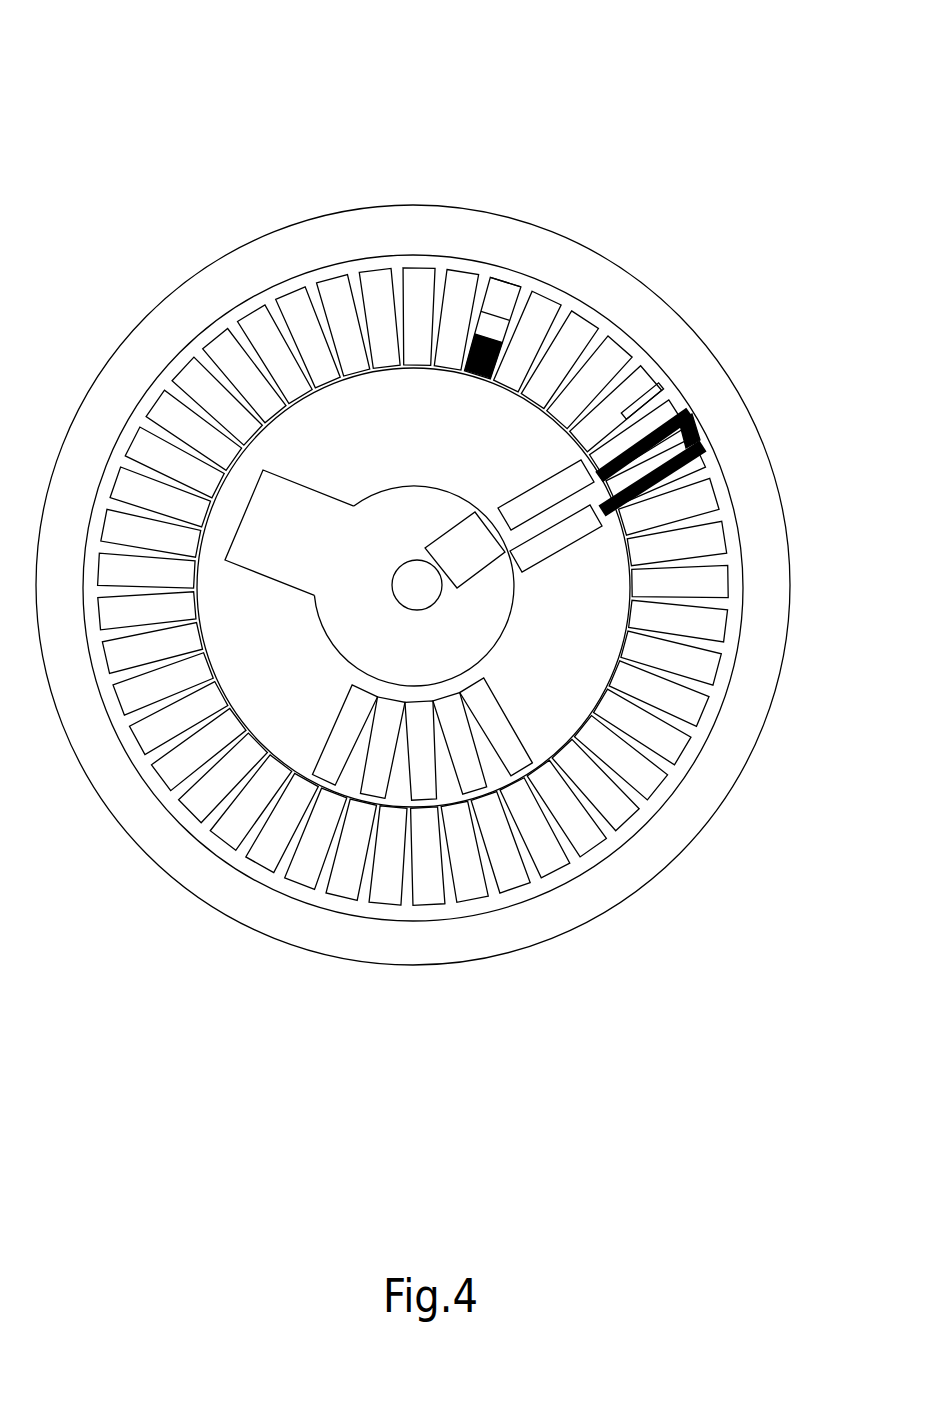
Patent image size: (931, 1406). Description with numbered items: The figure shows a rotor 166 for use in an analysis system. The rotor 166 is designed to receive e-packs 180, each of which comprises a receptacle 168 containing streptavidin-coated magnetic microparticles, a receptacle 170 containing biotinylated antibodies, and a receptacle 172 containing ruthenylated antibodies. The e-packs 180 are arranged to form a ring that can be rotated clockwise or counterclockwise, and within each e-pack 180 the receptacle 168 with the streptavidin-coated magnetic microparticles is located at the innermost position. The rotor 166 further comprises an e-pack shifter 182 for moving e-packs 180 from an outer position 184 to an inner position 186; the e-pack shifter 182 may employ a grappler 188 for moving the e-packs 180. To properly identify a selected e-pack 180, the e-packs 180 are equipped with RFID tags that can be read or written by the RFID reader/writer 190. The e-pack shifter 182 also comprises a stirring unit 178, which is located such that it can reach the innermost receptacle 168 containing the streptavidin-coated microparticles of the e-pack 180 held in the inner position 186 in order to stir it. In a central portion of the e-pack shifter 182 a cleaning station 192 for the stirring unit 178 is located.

The rotor 166 is at (585, 130).
The receptacle containing streptavidin-coated magnetic microparticles 168 is at (472, 385).
The receptacle containing biotinylated antibodies 170 is at (490, 330).
The receptacle containing ruthenylated antibodies 172 is at (507, 298).
The stirring unit 178 is at (482, 575).
The e-pack 180 is at (503, 282).
The e-pack shifter 182 is at (384, 490).
The outer position 184 is at (630, 412).
The inner position 186 is at (545, 482).
The grappler 188 is at (703, 447).
The RFID reader/writer 190 is at (700, 410).
The cleaning station 192 is at (392, 583).